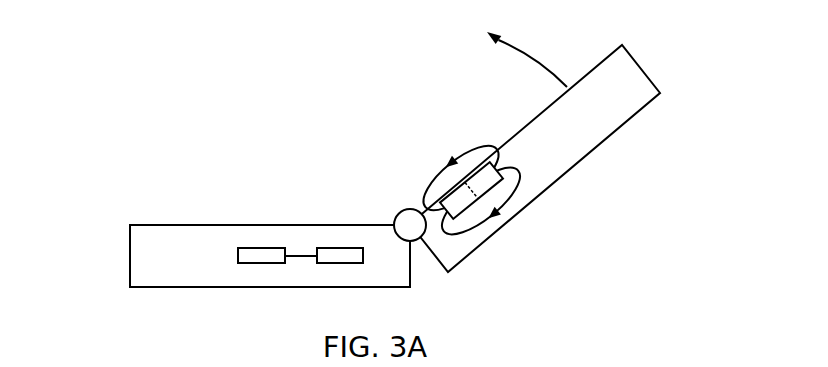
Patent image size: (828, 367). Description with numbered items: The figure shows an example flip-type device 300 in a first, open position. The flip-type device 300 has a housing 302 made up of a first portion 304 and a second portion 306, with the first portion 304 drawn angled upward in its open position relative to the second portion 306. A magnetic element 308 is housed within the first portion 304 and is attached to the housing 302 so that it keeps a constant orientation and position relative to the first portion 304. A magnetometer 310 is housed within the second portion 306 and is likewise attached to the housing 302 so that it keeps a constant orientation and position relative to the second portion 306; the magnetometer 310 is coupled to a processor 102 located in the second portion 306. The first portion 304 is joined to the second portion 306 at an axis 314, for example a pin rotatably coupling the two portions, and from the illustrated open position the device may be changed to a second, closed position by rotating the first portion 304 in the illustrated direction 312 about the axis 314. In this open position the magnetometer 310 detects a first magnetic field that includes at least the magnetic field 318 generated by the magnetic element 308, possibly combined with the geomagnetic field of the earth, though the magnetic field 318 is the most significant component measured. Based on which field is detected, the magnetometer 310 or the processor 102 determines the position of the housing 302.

The flip-type device 300 is at (170, 91).
The housing 302 is at (130, 247).
The first portion 304 is at (548, 117).
The second portion 306 is at (173, 242).
The magnetic element 308 is at (495, 165).
The magnetometer 310 is at (237, 251).
The processor 102 is at (348, 265).
The direction 312 is at (520, 43).
The axis 314 is at (398, 212).
The magnetic field 318 is at (443, 167).